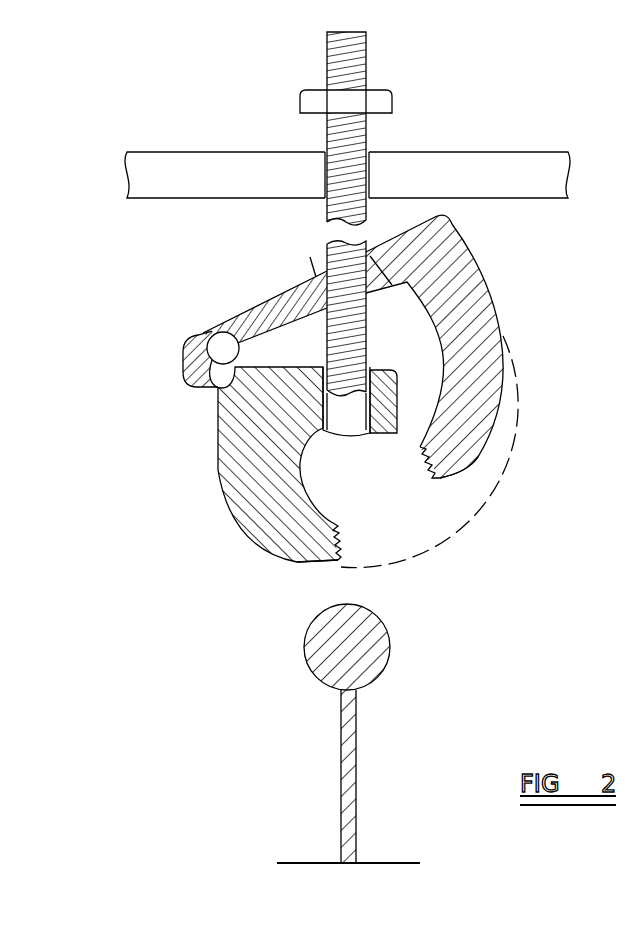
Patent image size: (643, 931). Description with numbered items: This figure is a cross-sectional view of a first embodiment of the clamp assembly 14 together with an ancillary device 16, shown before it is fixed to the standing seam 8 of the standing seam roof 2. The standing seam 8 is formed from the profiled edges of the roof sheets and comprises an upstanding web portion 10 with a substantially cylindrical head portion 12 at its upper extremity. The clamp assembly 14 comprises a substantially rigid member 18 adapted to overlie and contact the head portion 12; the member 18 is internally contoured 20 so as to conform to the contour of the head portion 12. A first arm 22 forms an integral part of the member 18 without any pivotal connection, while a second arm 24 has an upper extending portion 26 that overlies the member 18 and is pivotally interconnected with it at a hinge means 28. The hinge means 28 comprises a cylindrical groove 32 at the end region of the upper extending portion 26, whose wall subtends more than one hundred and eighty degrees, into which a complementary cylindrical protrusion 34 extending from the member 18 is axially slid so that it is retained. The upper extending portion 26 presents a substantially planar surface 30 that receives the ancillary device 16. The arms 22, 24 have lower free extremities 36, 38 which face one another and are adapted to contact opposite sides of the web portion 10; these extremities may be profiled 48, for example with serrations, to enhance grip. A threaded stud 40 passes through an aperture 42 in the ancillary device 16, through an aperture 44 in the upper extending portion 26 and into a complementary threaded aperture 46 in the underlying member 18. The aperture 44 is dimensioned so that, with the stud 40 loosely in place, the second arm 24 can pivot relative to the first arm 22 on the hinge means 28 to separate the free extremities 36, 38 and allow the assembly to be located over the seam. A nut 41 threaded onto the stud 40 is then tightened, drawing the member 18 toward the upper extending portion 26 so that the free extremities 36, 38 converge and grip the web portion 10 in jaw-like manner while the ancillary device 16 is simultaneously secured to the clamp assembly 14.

The standing seam roof 2 is at (384, 853).
The standing seam 8 is at (305, 717).
The web portion 10 is at (345, 755).
The head portion 12 is at (367, 657).
The clamp assembly 14 is at (530, 438).
The ancillary device 16 is at (493, 166).
The substantially rigid member 18 is at (267, 405).
The internal contour 20 is at (344, 402).
The first arm 22 is at (272, 488).
The second arm 24 is at (473, 370).
The upper extending portion 26 is at (265, 318).
The hinge means 28 is at (180, 337).
The surface 30 is at (411, 222).
The cylindrical groove 32 is at (218, 388).
The cylindrical protrusion 34 is at (203, 337).
The first lower free extremity 36 is at (296, 562).
The second lower free extremity 38 is at (423, 450).
The threaded stud 40 is at (340, 137).
The nut 41 is at (307, 100).
The aperture in the ancillary device 42 is at (370, 148).
The aperture in the upper extending portion 44 is at (315, 285).
The threaded aperture 46 is at (267, 450).
The profiling 48 is at (426, 465).